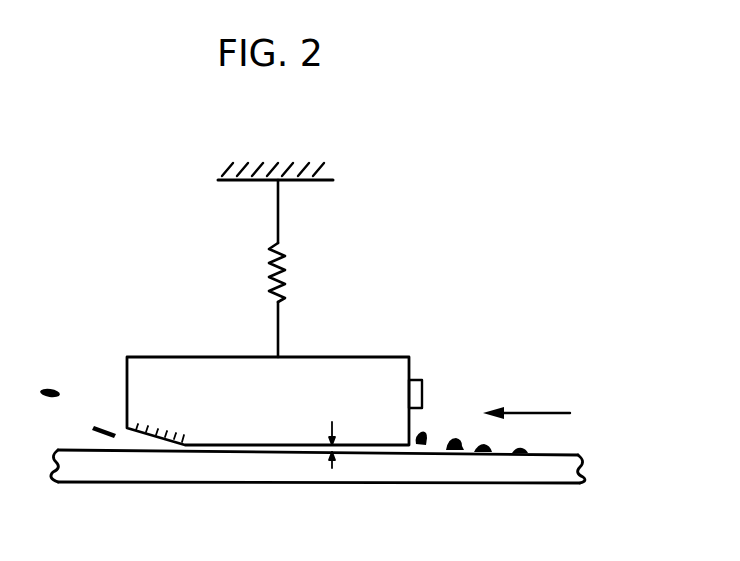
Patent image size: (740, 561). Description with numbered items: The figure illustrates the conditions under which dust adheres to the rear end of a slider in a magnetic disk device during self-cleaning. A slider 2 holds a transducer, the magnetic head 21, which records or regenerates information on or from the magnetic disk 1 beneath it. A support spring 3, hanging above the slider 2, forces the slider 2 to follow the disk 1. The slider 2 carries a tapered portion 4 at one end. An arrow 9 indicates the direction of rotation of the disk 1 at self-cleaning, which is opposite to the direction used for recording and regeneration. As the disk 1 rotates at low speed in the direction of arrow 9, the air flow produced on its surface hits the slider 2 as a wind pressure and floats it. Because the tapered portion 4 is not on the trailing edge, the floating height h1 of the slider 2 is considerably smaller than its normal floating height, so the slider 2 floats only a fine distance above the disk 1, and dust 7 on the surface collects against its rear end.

The magnetic disk 1 is at (107, 476).
The slider 2 is at (355, 372).
The magnetic head 21 is at (418, 378).
The support spring 3 is at (287, 253).
The tapered portion 4 is at (255, 476).
The dust 7 is at (53, 388).
The arrow indicating direction of rotation at self-cleaning 9 is at (517, 409).
The floating height h1 is at (336, 453).